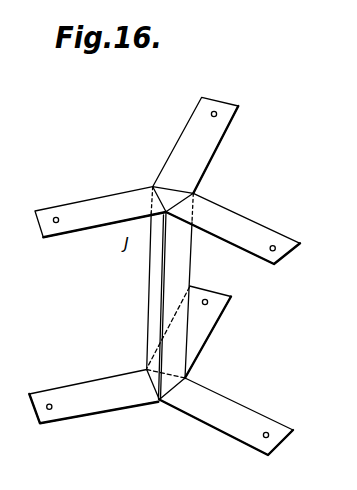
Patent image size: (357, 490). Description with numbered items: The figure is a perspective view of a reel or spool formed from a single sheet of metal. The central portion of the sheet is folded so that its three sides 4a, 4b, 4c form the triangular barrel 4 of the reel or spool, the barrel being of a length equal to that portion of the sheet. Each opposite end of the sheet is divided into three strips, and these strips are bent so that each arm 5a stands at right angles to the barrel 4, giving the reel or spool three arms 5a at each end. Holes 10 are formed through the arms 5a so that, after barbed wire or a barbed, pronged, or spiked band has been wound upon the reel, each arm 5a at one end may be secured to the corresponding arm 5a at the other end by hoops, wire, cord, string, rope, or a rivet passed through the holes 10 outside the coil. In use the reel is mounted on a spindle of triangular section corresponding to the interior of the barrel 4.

The barrel 4 is at (168, 306).
The side of barrel 4a is at (150, 274).
The side of barrel 4b is at (176, 195).
The side of barrel 4c is at (181, 269).
The arms 5a is at (164, 276).
The holes 10 is at (216, 112).